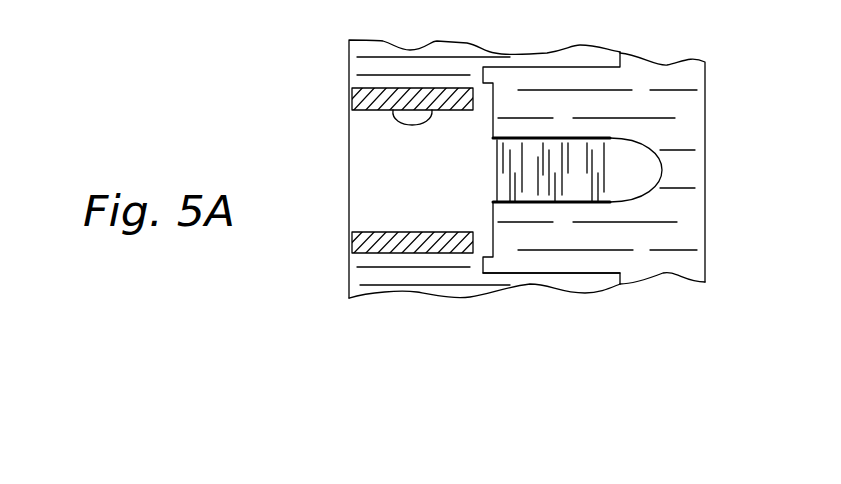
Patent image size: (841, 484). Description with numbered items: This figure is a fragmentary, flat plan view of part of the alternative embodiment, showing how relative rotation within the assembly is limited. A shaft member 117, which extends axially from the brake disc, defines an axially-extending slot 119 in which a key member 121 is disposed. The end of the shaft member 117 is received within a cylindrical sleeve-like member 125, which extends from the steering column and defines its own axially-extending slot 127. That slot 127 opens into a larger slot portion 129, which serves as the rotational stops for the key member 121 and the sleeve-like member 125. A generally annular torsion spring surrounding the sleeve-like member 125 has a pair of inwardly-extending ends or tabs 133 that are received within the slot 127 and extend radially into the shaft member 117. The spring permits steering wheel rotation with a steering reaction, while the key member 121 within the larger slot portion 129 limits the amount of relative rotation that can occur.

The shaft member 117 is at (667, 102).
The axially-extending slot 119 is at (632, 200).
The key member 121 is at (530, 165).
The sleeve-like member 125 is at (368, 275).
The axially-extending slot 127 is at (432, 110).
The larger slot portion 129 is at (549, 273).
The inwardly-extending ends or tabs 133 is at (360, 100).